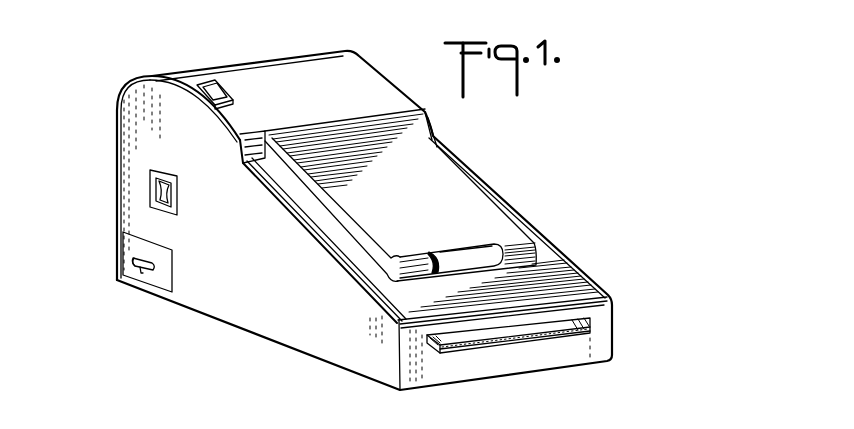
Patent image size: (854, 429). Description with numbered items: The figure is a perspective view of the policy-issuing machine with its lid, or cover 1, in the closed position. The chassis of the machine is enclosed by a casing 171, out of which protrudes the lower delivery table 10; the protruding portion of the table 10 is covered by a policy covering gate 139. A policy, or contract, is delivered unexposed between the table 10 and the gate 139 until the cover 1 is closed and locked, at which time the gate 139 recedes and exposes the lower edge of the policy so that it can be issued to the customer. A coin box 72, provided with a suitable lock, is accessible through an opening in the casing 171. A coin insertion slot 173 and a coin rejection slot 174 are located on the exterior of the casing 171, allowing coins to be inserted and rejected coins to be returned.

The cover 1 is at (509, 226).
The lower delivery table 10 is at (592, 336).
The coin box 72 is at (163, 282).
The policy covering gate 139 is at (592, 324).
The casing 171 is at (310, 340).
The coin insertion slot 173 is at (207, 82).
The coin rejection slot 174 is at (175, 202).